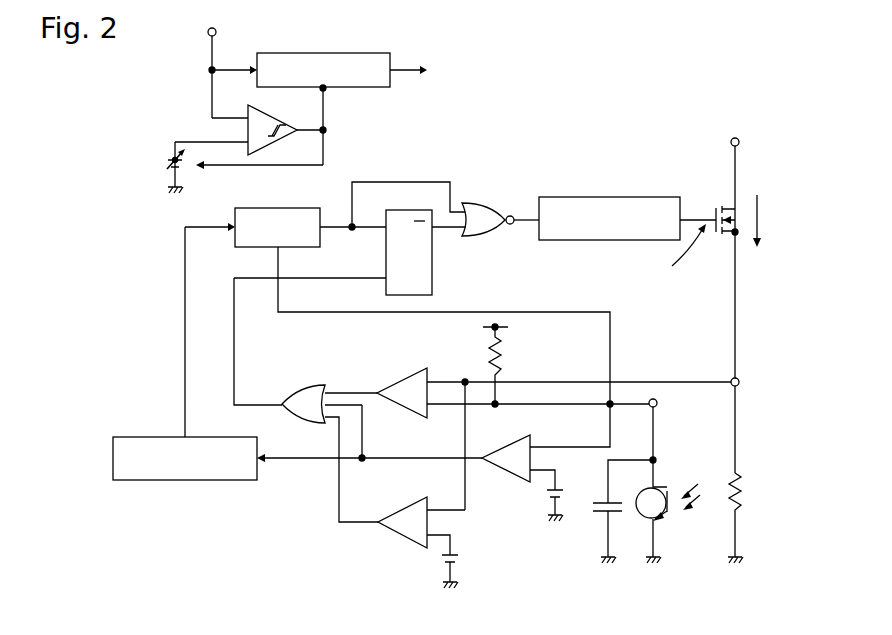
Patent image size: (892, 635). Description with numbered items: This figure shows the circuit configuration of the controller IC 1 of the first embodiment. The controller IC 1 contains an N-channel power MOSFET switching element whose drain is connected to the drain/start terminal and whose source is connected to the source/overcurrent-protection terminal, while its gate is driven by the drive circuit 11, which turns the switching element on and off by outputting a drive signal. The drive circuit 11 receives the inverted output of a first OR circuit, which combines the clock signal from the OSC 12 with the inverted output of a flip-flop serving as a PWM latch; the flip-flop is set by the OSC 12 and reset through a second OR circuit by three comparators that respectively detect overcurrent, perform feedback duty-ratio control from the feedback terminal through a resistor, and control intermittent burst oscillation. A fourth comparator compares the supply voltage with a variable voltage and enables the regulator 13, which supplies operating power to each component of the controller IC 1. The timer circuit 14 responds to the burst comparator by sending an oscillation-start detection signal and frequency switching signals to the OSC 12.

The controller IC 1 is at (600, 109).
The drive circuit 11 is at (638, 197).
The OSC (internal oscillator) 12 is at (302, 208).
The regulator 13 is at (357, 53).
The timer circuit 14 is at (233, 480).